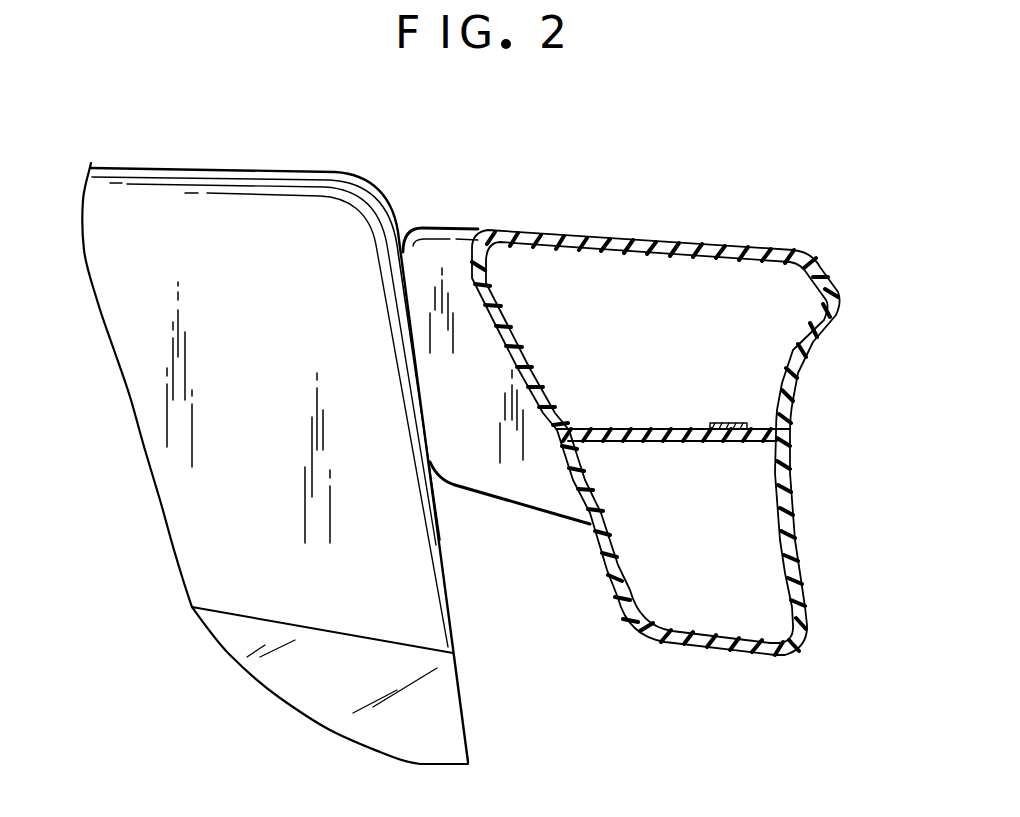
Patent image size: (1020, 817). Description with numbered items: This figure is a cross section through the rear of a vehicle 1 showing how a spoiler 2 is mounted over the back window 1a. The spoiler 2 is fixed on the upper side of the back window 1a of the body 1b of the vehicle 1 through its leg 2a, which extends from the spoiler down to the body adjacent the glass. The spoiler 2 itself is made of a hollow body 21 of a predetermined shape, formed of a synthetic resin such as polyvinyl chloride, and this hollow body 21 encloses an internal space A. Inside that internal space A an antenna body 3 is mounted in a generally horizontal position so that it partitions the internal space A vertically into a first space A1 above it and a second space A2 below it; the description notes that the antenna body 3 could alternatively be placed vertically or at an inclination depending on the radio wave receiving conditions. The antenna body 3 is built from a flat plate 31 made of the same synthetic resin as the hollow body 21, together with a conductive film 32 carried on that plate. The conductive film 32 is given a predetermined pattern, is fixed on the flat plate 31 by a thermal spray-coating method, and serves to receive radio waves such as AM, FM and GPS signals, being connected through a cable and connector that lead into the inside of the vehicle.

The vehicle 1 is at (267, 169).
The back window 1a is at (440, 718).
The body 1b is at (350, 280).
The spoiler 2 is at (773, 243).
The leg 2a is at (497, 477).
The hollow body 21 is at (790, 540).
The antenna body 3 is at (713, 447).
The flat plate 31 is at (632, 428).
The conductive film 32 is at (730, 423).
The internal space A is at (688, 373).
The first space A1 is at (550, 277).
The second space A2 is at (740, 605).